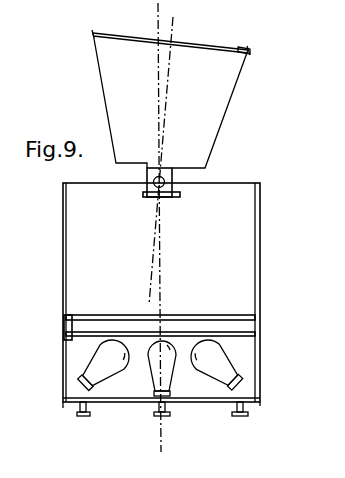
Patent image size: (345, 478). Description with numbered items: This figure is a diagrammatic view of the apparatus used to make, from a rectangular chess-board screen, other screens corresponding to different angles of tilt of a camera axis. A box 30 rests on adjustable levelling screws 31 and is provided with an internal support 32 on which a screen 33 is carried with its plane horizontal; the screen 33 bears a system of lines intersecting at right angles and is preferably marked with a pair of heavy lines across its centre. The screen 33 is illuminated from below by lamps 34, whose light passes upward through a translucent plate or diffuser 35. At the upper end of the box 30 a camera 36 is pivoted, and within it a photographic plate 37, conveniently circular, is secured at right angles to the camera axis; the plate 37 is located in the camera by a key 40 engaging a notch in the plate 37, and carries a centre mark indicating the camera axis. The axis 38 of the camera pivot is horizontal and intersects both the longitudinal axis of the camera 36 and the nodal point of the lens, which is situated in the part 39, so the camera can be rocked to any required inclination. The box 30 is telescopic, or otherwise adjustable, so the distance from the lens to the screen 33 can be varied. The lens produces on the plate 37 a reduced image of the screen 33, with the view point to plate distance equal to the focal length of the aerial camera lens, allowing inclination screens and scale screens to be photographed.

The box 30 is at (262, 365).
The adjustable levelling screws 31 is at (238, 415).
The internal support 32 is at (66, 333).
The screen 33 is at (107, 315).
The lamps 34 is at (203, 368).
The translucent plate or diffuser 35 is at (190, 331).
The camera 36 is at (227, 107).
The photographic plate 37 is at (134, 41).
The axis of the pivot 38 is at (147, 186).
The lens part 39 is at (176, 191).
The key 40 is at (238, 51).